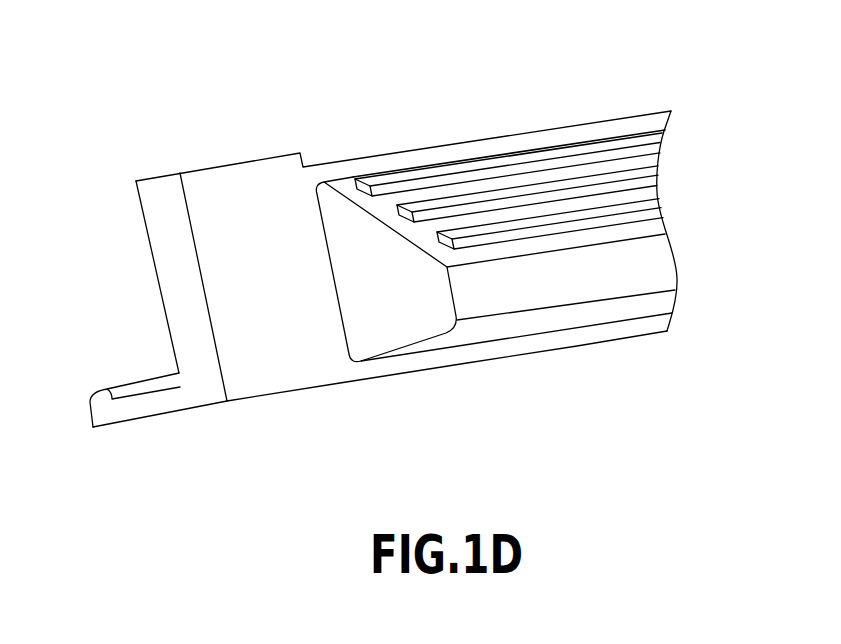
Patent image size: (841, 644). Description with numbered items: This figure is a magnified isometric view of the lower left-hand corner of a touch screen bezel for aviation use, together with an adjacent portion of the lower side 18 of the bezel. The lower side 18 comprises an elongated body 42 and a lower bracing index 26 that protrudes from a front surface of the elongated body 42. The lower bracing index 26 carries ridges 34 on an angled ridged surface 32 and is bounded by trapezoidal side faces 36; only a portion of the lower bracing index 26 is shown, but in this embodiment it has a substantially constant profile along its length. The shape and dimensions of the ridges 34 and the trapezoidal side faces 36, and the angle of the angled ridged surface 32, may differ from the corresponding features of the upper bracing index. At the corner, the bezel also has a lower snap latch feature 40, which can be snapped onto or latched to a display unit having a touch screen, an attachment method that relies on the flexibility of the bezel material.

The lower side 18 is at (577, 346).
The lower bracing index 26 is at (643, 311).
The angled ridged surface 32 is at (525, 153).
The ridges 34 is at (622, 177).
The trapezoidal side faces 36 is at (362, 318).
The lower snap latch feature 40 is at (100, 434).
The elongated body 42 is at (467, 363).